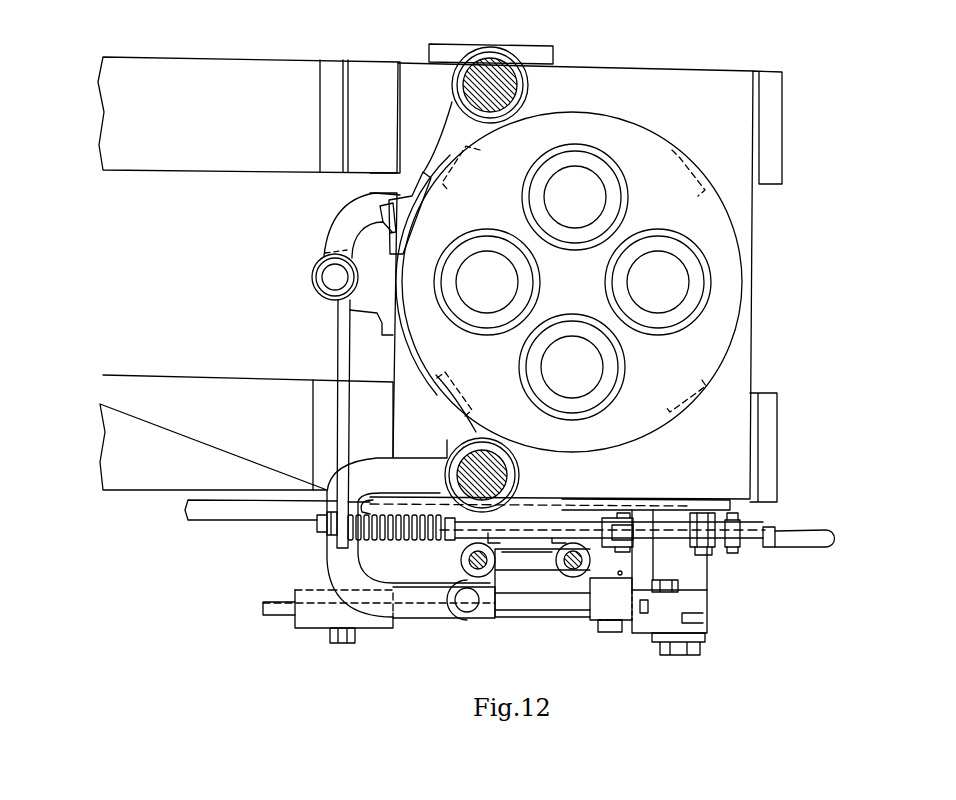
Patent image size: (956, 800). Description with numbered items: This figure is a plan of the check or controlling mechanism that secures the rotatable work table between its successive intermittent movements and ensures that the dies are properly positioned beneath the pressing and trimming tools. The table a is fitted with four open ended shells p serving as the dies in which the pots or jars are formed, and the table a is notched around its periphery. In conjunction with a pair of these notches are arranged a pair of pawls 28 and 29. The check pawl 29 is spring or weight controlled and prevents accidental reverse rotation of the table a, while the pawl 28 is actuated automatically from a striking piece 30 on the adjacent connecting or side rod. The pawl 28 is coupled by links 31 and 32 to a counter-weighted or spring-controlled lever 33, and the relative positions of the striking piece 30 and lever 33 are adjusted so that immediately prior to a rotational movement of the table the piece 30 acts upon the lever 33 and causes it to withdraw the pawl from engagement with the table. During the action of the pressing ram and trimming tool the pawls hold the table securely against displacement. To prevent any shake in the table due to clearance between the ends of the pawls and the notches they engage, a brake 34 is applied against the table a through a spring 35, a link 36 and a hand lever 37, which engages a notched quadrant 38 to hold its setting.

The pawl 28 is at (456, 416).
The check pawl 29 is at (462, 144).
The striking piece 30 is at (620, 573).
The link 31 is at (420, 610).
The link 32 is at (540, 606).
The lever 33 is at (700, 607).
The brake 34 is at (340, 238).
The spring 35 is at (401, 539).
The link 36 is at (537, 527).
The hand lever 37 is at (815, 545).
The notched quadrant 38 is at (736, 522).
The open ended shells p is at (570, 318).
The table a is at (582, 282).